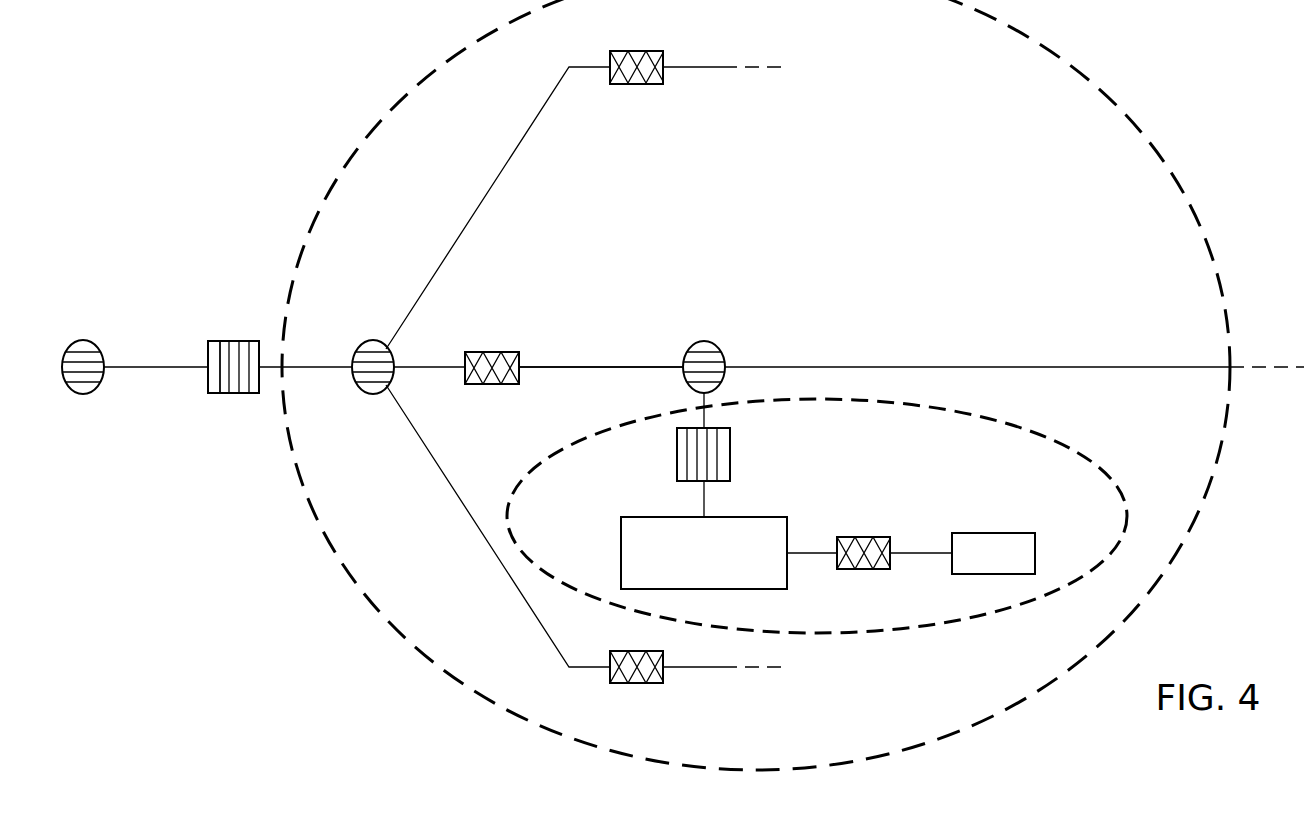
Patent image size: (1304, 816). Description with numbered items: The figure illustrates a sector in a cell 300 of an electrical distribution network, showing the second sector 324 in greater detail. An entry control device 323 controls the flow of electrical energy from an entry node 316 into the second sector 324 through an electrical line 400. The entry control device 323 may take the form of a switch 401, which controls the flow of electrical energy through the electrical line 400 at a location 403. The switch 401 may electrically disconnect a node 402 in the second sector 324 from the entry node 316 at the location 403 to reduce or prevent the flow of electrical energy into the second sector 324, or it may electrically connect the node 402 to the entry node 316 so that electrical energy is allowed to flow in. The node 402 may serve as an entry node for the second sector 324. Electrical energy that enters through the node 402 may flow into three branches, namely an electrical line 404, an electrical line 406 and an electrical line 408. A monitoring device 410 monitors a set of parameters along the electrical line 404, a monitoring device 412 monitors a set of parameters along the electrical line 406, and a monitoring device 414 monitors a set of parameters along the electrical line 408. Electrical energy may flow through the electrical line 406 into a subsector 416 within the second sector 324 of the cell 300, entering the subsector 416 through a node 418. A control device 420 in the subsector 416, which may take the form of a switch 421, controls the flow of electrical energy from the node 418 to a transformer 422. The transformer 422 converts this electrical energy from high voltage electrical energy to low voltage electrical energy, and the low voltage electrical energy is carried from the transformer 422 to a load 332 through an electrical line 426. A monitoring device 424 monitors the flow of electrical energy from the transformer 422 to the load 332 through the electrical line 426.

The cell 300 is at (315, 93).
The entry node 316 is at (88, 340).
The entry control device 323 is at (232, 341).
The second sector 324 is at (1150, 141).
The load 332 is at (993, 533).
The electrical line 400 is at (330, 367).
The switch 401 is at (210, 380).
The node 402 is at (371, 340).
The location 403 is at (213, 404).
The electrical line 404 is at (692, 67).
The electrical line 406 is at (598, 367).
The electrical line 408 is at (693, 667).
The monitoring device 410 is at (633, 52).
The monitoring device 412 is at (489, 352).
The monitoring device 414 is at (632, 683).
The subsector 416 is at (915, 486).
The node 418 is at (714, 345).
The control device 420 is at (676, 458).
The switch 421 is at (733, 454).
The transformer 422 is at (621, 550).
The monitoring device 424 is at (862, 569).
The electrical line 426 is at (918, 553).